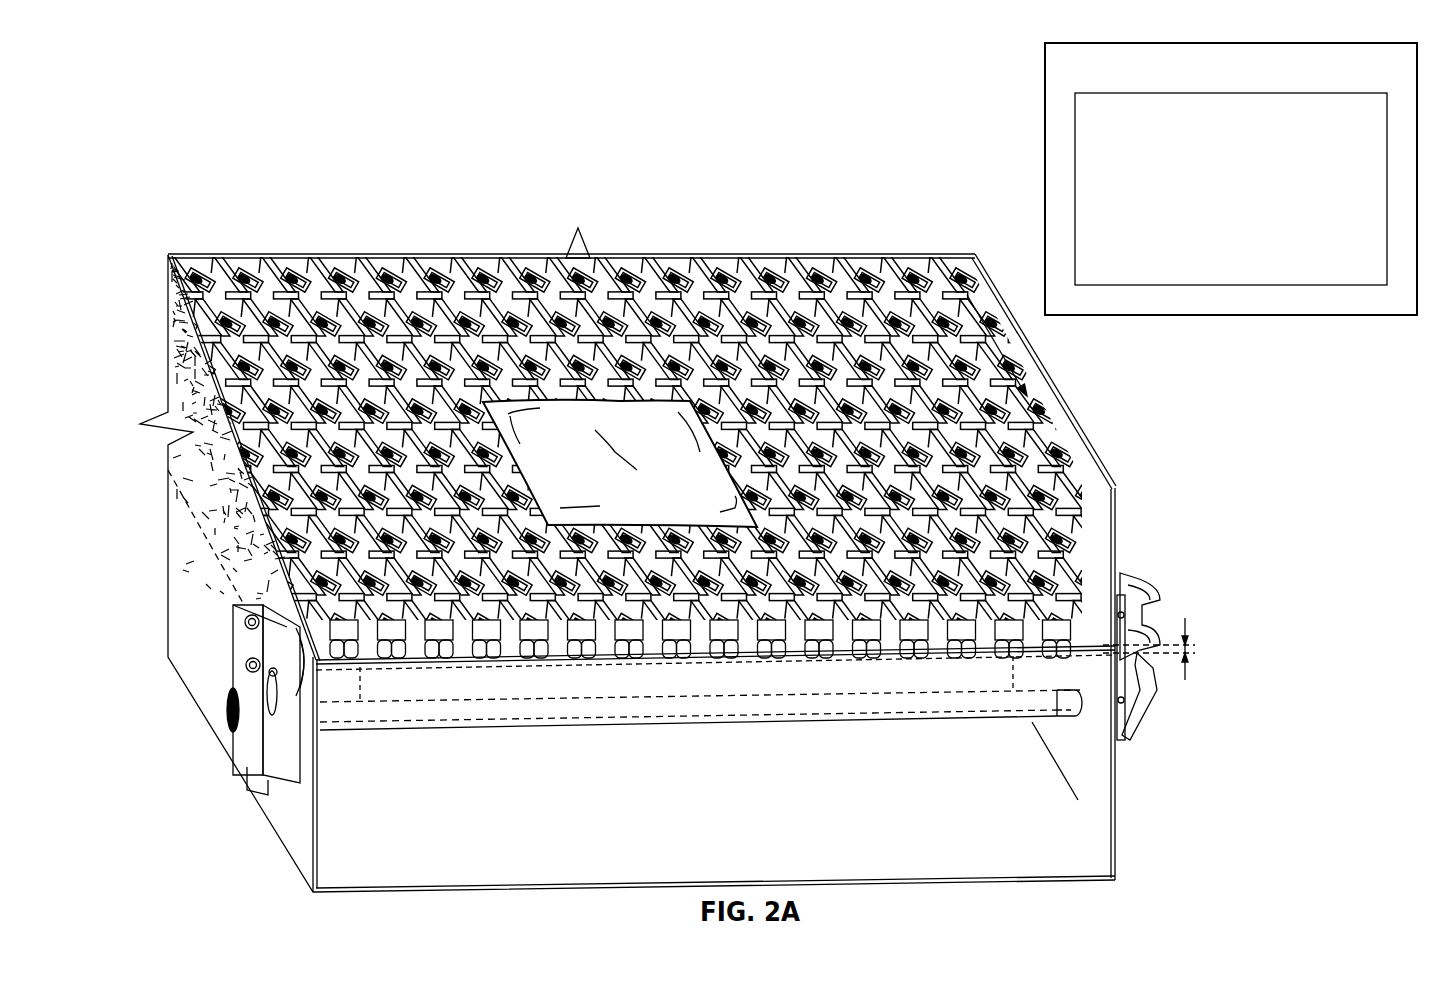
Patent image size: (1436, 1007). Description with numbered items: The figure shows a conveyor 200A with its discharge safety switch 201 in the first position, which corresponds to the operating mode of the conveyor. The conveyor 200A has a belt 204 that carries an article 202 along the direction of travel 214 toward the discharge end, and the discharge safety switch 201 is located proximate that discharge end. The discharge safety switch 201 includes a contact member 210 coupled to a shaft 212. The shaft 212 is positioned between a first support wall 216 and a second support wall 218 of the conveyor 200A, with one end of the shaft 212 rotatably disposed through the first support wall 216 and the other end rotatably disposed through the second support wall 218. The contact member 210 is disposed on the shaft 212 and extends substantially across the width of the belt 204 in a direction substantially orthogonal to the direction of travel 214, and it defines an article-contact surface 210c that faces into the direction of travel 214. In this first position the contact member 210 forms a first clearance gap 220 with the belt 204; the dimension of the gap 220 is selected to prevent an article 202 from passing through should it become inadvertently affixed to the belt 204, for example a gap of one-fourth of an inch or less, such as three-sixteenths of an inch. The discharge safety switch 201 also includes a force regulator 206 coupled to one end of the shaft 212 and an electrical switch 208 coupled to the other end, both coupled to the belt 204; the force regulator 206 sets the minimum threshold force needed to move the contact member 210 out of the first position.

The conveyor 200A is at (218, 146).
The discharge safety switch 201 is at (1110, 42).
The article 202 is at (588, 471).
The belt 204 is at (485, 349).
The force regulator 206 is at (215, 667).
The switch 208 is at (1127, 580).
The contact member 210 is at (980, 680).
The article-contact surface 210c is at (832, 693).
The shaft 212 is at (1078, 705).
The direction of travel 214 is at (1012, 365).
The first support wall 216 is at (178, 560).
The second support wall 218 is at (1072, 458).
The first clearance gap 220 is at (1185, 633).